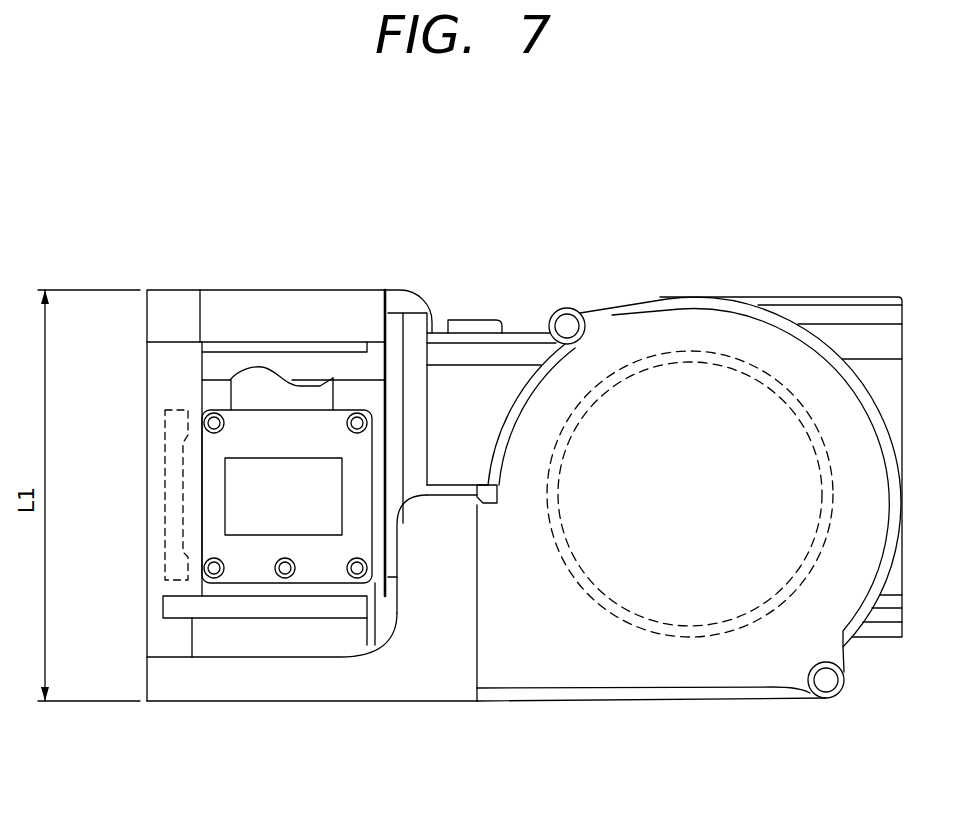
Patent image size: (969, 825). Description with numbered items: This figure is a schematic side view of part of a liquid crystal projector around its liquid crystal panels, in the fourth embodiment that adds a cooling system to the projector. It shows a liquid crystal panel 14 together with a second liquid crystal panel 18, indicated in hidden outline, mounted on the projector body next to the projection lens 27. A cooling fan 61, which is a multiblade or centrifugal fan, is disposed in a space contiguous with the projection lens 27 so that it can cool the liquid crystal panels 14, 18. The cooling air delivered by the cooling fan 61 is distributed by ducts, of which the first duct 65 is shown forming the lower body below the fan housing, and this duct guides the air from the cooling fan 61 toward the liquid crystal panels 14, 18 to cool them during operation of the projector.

The liquid crystal panel 14 is at (240, 514).
The liquid crystal panel 18 is at (168, 437).
The projection lens 27 is at (885, 312).
The cooling fan 61 is at (645, 338).
The first duct 65 is at (405, 678).